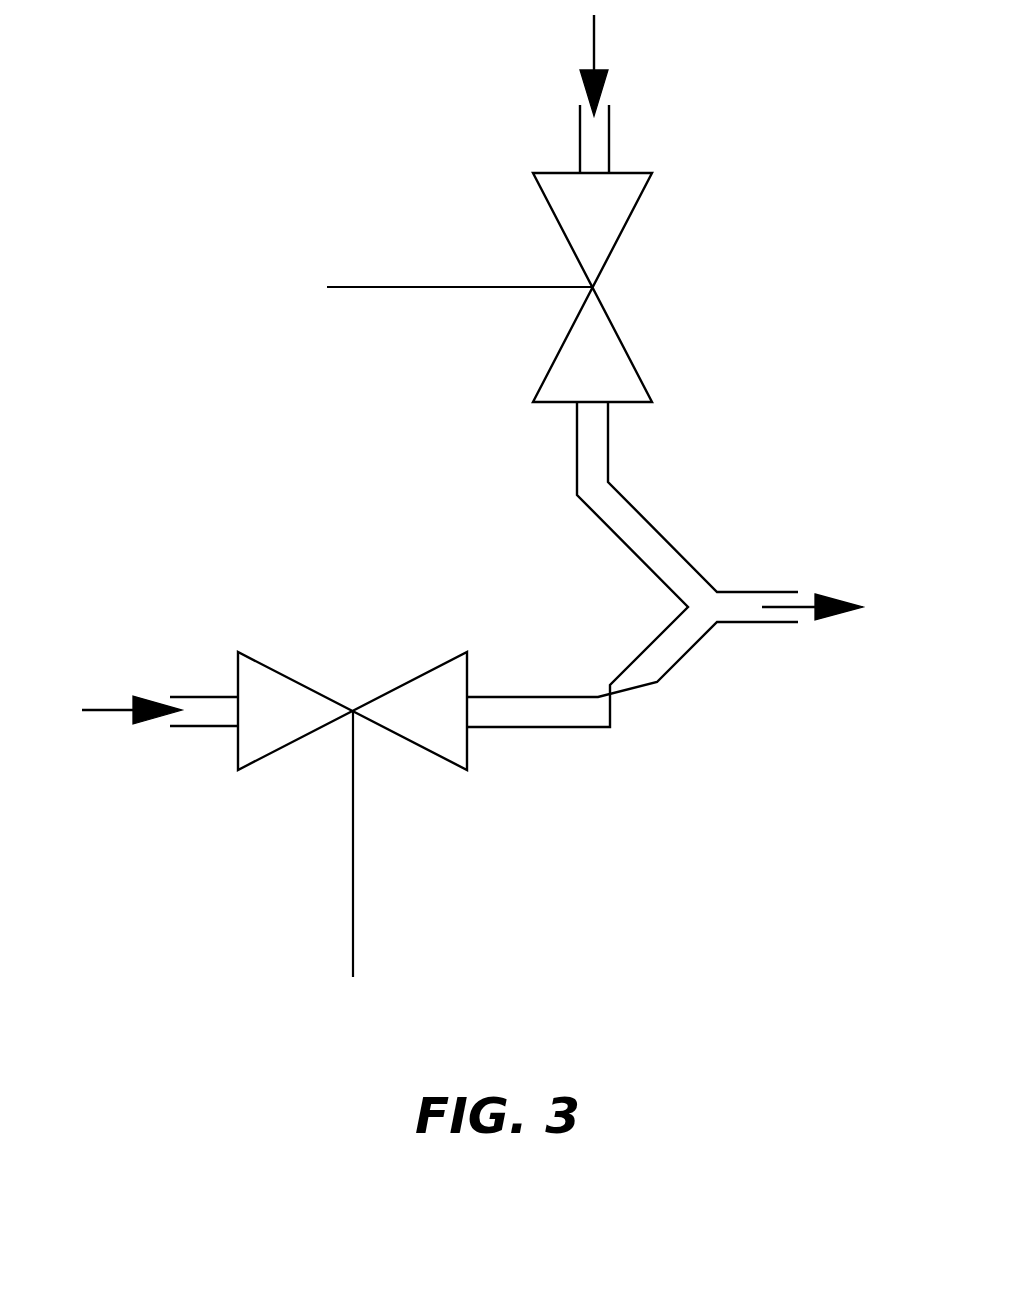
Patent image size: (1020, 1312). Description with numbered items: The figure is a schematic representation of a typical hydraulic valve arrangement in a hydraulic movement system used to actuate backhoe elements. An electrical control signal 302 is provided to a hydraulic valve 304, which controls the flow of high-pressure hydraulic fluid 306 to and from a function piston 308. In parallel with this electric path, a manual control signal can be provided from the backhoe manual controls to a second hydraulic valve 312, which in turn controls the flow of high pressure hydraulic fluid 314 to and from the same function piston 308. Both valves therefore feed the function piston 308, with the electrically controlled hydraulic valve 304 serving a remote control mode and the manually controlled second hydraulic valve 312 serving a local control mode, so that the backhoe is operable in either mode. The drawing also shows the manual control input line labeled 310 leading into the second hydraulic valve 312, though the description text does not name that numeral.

The electrical control signal 302 is at (387, 288).
The hydraulic valve 304 is at (600, 287).
The high-pressure hydraulic fluid 306 is at (575, 108).
The function piston 308 is at (805, 620).
The manual control 310 is at (353, 917).
The second hydraulic valve 312 is at (353, 700).
The high pressure hydraulic fluid 314 is at (170, 722).